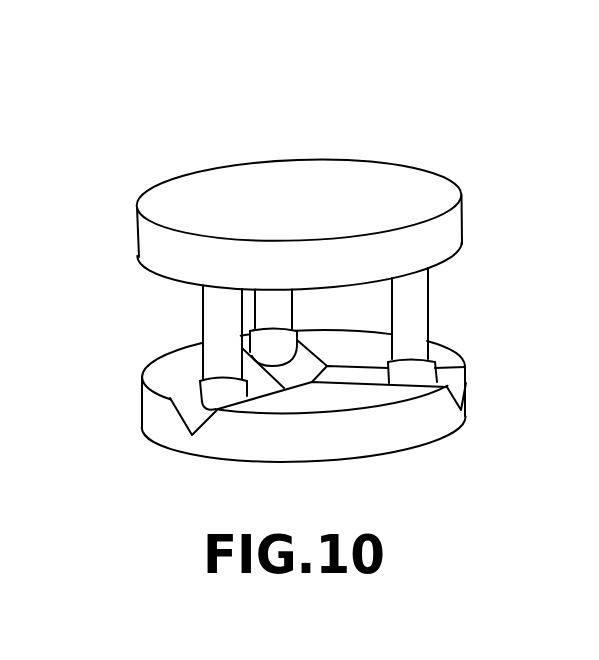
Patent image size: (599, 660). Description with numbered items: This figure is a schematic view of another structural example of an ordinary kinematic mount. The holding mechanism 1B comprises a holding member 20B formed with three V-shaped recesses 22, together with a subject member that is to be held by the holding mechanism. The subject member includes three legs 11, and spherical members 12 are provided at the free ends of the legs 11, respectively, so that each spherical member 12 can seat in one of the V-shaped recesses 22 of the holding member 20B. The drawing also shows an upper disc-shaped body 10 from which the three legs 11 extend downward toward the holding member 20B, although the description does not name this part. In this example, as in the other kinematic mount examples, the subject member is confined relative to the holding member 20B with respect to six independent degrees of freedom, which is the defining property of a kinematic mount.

The holding mechanism 1B is at (192, 150).
The upper disc 10 is at (405, 185).
The legs 11 is at (418, 313).
The spherical members 12 is at (445, 360).
The holding member 20B is at (402, 438).
The V-shaped recesses 22 is at (192, 415).